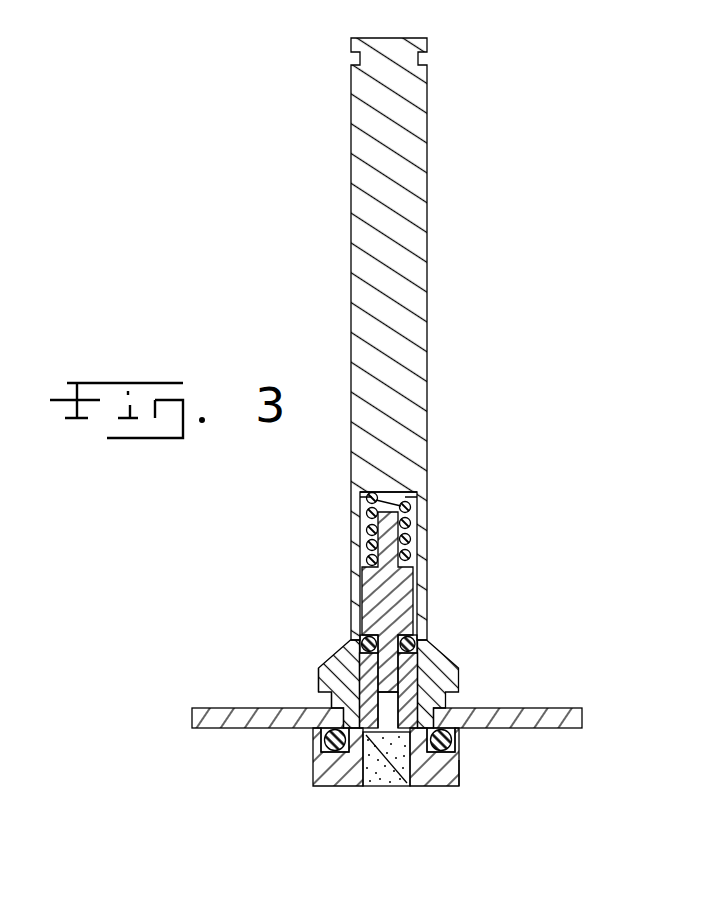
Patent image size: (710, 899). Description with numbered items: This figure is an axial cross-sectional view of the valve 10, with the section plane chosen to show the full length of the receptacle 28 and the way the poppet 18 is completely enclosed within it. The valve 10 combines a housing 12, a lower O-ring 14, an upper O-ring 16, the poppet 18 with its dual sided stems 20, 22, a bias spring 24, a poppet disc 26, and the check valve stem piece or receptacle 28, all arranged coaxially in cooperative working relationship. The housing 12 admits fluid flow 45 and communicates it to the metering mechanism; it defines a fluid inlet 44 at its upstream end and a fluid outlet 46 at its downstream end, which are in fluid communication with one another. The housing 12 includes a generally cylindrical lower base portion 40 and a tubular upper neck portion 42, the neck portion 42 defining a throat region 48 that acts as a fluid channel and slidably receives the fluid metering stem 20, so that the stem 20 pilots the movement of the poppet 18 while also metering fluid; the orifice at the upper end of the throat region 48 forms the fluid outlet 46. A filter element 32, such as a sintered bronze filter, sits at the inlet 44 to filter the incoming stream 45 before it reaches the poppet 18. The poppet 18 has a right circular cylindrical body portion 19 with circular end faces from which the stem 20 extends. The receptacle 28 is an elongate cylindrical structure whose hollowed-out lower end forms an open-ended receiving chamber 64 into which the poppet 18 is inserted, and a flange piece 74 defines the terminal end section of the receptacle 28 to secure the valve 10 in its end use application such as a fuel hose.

The valve 10 is at (298, 208).
The housing 12 is at (327, 777).
The lower O-ring 14 is at (322, 740).
The upper O-ring 16 is at (423, 652).
The poppet 18 is at (407, 593).
The cylindrical body portion 19 is at (367, 607).
The fluid metering stem 20 is at (396, 690).
The stem 22 is at (400, 533).
The bias spring 24 is at (402, 503).
The poppet disc 26 is at (583, 718).
The receptacle 28 is at (421, 100).
The filter element 32 is at (401, 778).
The base portion 40 is at (459, 781).
The neck portion 42 is at (333, 661).
The fluid inlet 44 is at (367, 797).
The fluid flow 45 is at (393, 798).
The fluid outlet 46 is at (365, 642).
The throat region 48 is at (378, 722).
The receiving chamber 64 is at (342, 561).
The flange piece 74 is at (333, 694).